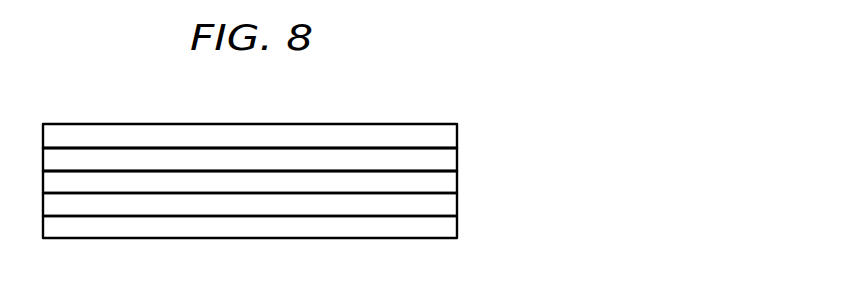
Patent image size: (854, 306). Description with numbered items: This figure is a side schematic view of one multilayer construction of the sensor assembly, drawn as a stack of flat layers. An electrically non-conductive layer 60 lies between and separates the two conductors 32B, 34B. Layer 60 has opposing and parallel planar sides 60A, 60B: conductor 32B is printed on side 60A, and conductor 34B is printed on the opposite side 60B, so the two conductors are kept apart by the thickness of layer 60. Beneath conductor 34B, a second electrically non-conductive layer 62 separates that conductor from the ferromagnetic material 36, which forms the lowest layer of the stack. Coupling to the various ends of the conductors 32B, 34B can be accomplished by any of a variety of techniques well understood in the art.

The conductor 32B is at (448, 139).
The electrically non-conductive layer 60 is at (447, 163).
The planar side 60A is at (208, 148).
The planar side 60B is at (278, 171).
The conductor 34B is at (447, 186).
The electrically non-conductive layer 62 is at (447, 208).
The ferromagnetic material 36 is at (448, 226).